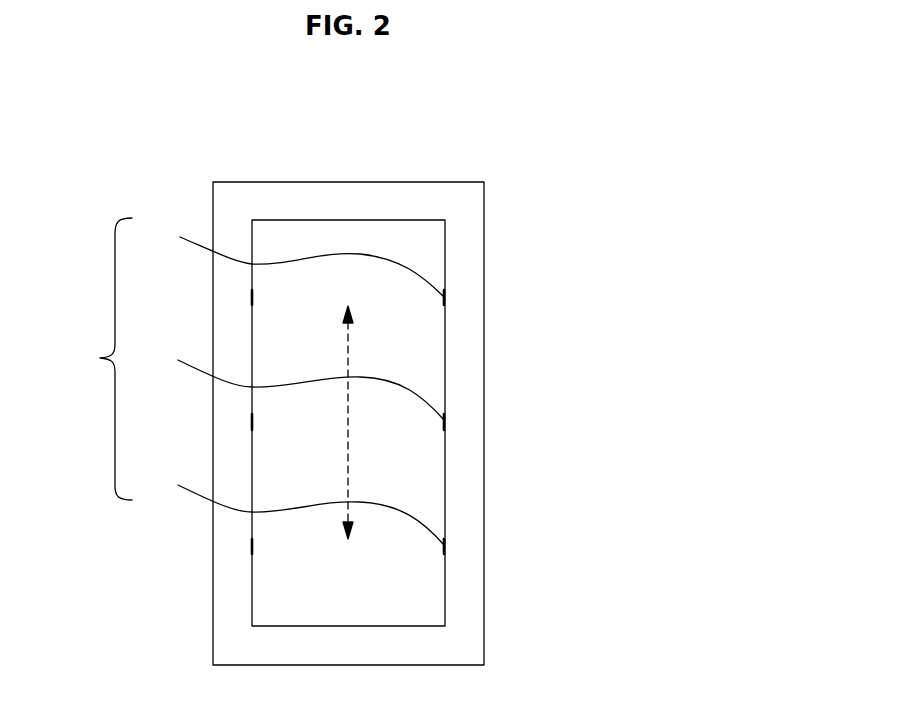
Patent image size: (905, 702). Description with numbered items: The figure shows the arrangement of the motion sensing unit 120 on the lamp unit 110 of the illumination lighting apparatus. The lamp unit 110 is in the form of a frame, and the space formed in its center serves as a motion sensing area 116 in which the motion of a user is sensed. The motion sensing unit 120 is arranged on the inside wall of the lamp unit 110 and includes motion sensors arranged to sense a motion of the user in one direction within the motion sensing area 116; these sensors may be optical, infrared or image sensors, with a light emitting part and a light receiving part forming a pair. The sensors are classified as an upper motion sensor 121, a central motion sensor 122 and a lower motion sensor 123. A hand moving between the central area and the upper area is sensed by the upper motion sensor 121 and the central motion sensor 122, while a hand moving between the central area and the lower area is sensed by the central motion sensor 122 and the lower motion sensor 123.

The lamp unit 110 is at (490, 211).
The motion sensing area 116 is at (392, 573).
The motion sensing unit 120 is at (92, 359).
The upper motion sensor 121 is at (252, 298).
The central motion sensor 122 is at (252, 422).
The lower motion sensor 123 is at (252, 547).